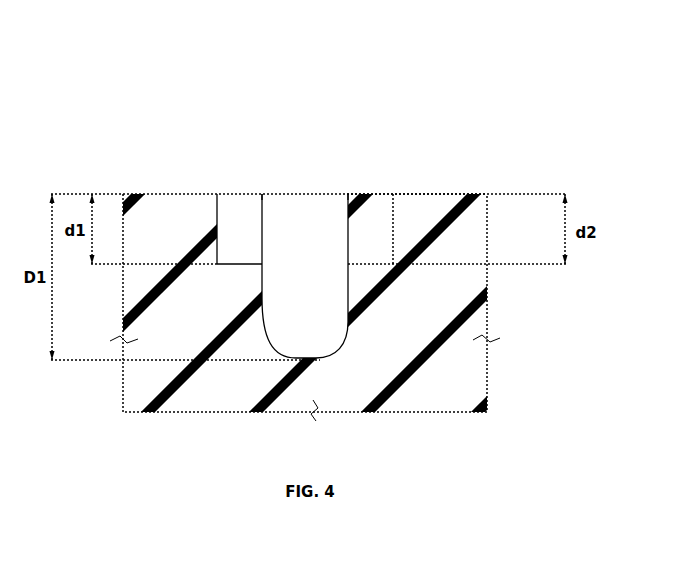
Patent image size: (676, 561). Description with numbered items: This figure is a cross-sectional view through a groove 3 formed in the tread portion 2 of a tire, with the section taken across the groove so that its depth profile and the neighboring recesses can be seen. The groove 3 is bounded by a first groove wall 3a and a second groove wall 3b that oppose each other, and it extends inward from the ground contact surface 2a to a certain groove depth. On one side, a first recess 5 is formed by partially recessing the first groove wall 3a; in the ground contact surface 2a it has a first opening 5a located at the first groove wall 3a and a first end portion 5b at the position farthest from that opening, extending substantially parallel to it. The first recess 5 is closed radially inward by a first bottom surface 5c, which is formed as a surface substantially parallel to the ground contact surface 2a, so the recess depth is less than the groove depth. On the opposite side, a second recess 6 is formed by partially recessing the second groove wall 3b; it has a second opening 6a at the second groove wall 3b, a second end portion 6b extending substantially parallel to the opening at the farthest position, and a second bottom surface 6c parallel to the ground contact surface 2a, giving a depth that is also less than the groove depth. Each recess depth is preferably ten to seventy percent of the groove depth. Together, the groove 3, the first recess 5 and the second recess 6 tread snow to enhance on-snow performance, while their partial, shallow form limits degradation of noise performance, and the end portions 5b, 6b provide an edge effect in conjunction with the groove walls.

The tread portion 2 is at (461, 101).
The ground contact surface 2a is at (456, 193).
The groove 3 is at (306, 224).
The first groove wall 3a is at (265, 222).
The second groove wall 3b is at (346, 221).
The first recess 5 is at (192, 184).
The first opening 5a is at (262, 192).
The first end portion 5b is at (216, 192).
The first bottom surface 5c is at (244, 262).
The second recess 6 is at (456, 184).
The second opening 6a is at (349, 192).
The second end portion 6b is at (394, 193).
The second bottom surface 6c is at (366, 261).